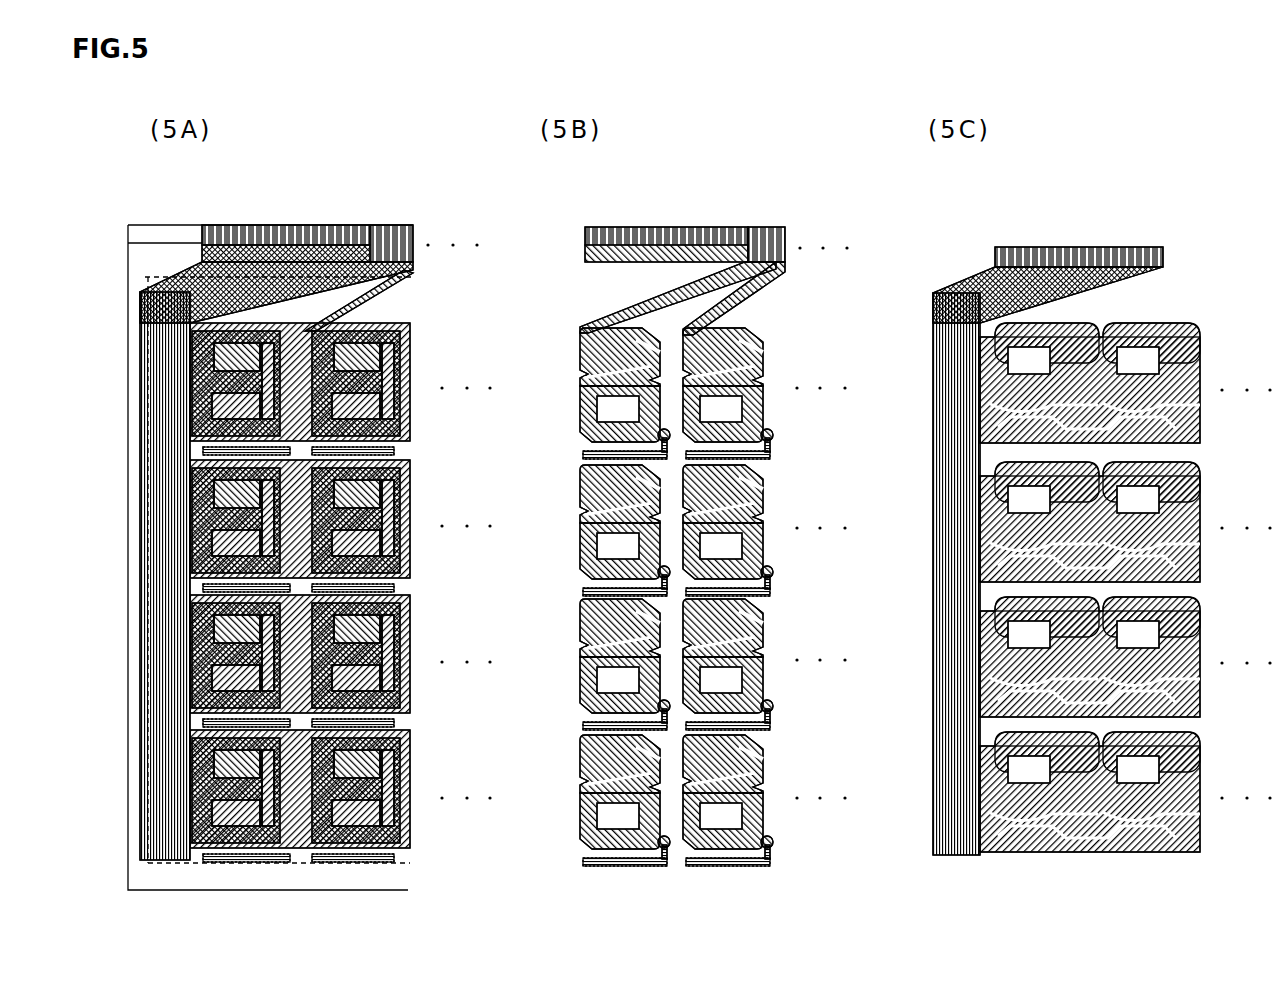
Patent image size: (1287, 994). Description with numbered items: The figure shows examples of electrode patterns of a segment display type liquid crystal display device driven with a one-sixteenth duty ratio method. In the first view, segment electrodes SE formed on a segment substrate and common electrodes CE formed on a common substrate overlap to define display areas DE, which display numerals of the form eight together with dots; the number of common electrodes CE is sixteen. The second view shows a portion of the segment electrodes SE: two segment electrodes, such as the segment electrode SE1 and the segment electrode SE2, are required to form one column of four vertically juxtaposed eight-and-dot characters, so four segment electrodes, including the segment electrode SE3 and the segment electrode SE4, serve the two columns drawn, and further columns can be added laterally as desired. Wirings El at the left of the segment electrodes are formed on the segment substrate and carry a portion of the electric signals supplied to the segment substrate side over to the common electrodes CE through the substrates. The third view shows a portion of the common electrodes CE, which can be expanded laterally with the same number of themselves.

In FIG. 5A, the segment electrodes SE is at (430, 218).
In FIG. 5A, the display areas DE is at (353, 323).
In FIG. 5A, the common electrodes CE is at (410, 318).
In FIG. 5B, the wirings El is at (748, 220).
In FIG. 5B, the segment electrode SE1 is at (590, 360).
In FIG. 5B, the segment electrode SE2 is at (610, 327).
In FIG. 5B, the segment electrode SE3 is at (720, 850).
In FIG. 5B, the segment electrode SE4 is at (752, 768).